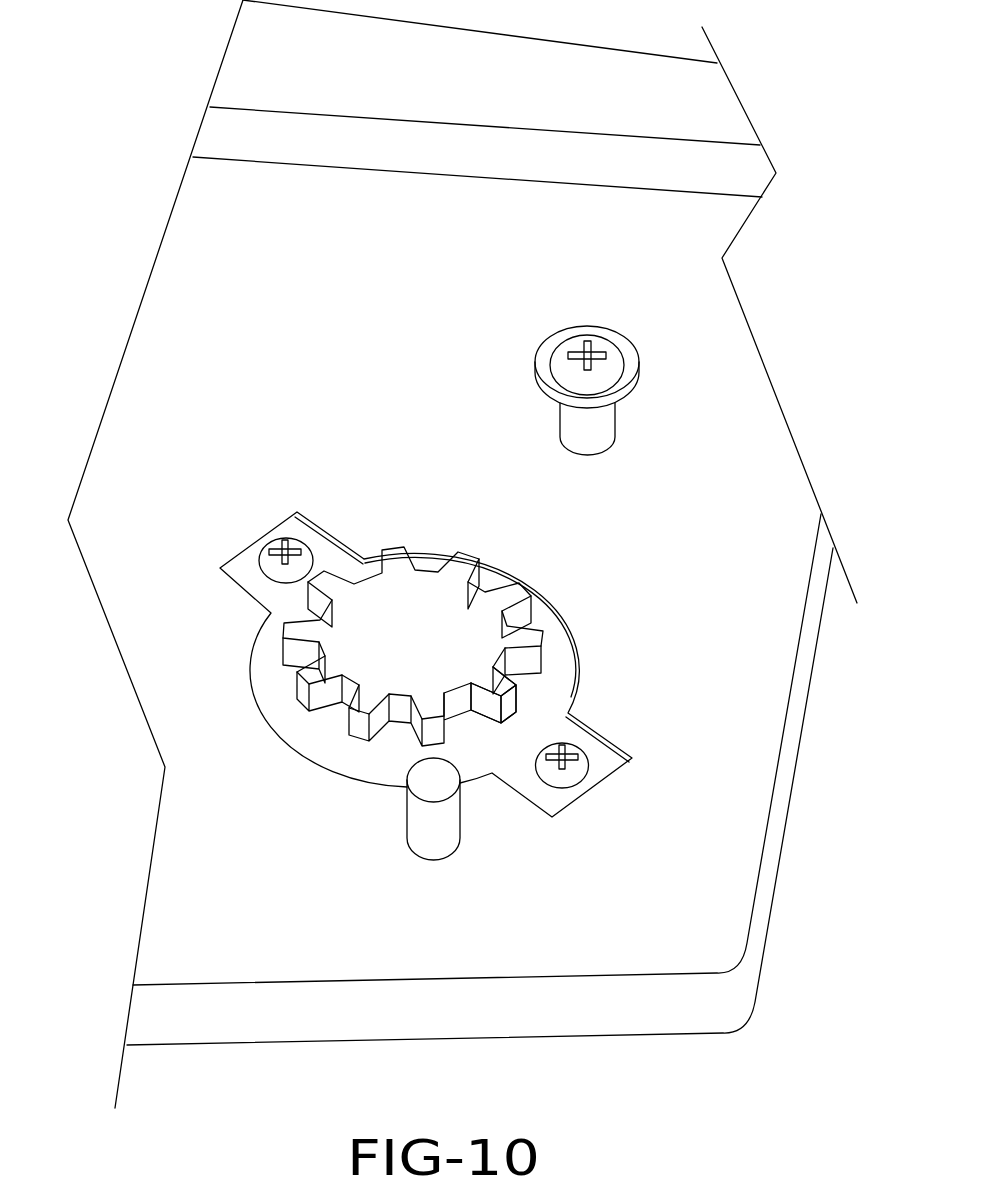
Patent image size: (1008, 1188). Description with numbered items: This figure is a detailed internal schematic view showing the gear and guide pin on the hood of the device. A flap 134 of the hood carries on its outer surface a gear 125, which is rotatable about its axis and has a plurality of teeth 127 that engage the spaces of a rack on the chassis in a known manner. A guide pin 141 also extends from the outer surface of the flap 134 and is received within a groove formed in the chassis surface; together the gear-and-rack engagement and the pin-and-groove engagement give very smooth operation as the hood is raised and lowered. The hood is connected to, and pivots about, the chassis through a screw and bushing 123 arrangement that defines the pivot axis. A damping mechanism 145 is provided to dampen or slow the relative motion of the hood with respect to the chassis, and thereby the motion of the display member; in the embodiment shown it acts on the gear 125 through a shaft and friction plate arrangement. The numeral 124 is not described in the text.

The flap 134 is at (187, 243).
The damping mechanism 145 is at (230, 528).
The screw head 124 is at (602, 344).
The bushing 123 is at (595, 430).
The gear 125 is at (467, 638).
The teeth 127 is at (520, 688).
The guide pin 141 is at (427, 823).